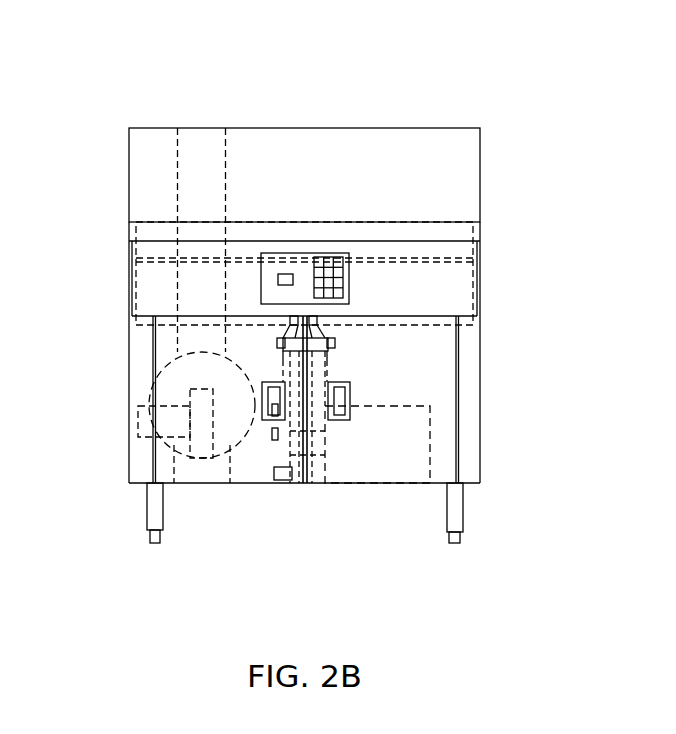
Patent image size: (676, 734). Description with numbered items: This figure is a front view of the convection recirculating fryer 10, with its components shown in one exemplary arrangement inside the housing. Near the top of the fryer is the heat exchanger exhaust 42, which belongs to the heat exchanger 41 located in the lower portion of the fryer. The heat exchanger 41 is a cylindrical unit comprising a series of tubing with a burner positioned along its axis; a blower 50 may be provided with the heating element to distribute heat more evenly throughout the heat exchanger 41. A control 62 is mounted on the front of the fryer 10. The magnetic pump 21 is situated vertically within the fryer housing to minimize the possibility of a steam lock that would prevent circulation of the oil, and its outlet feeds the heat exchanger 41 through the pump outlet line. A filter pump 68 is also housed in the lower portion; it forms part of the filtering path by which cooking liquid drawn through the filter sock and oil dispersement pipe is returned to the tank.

The convection fryer 10 is at (366, 279).
The heat exchanger exhaust 42 is at (140, 214).
The control 62 is at (193, 235).
The heat exchanger 41 is at (145, 379).
The blower 50 is at (128, 441).
The magnetic pump 21 is at (302, 436).
The filter pump 68 is at (384, 494).